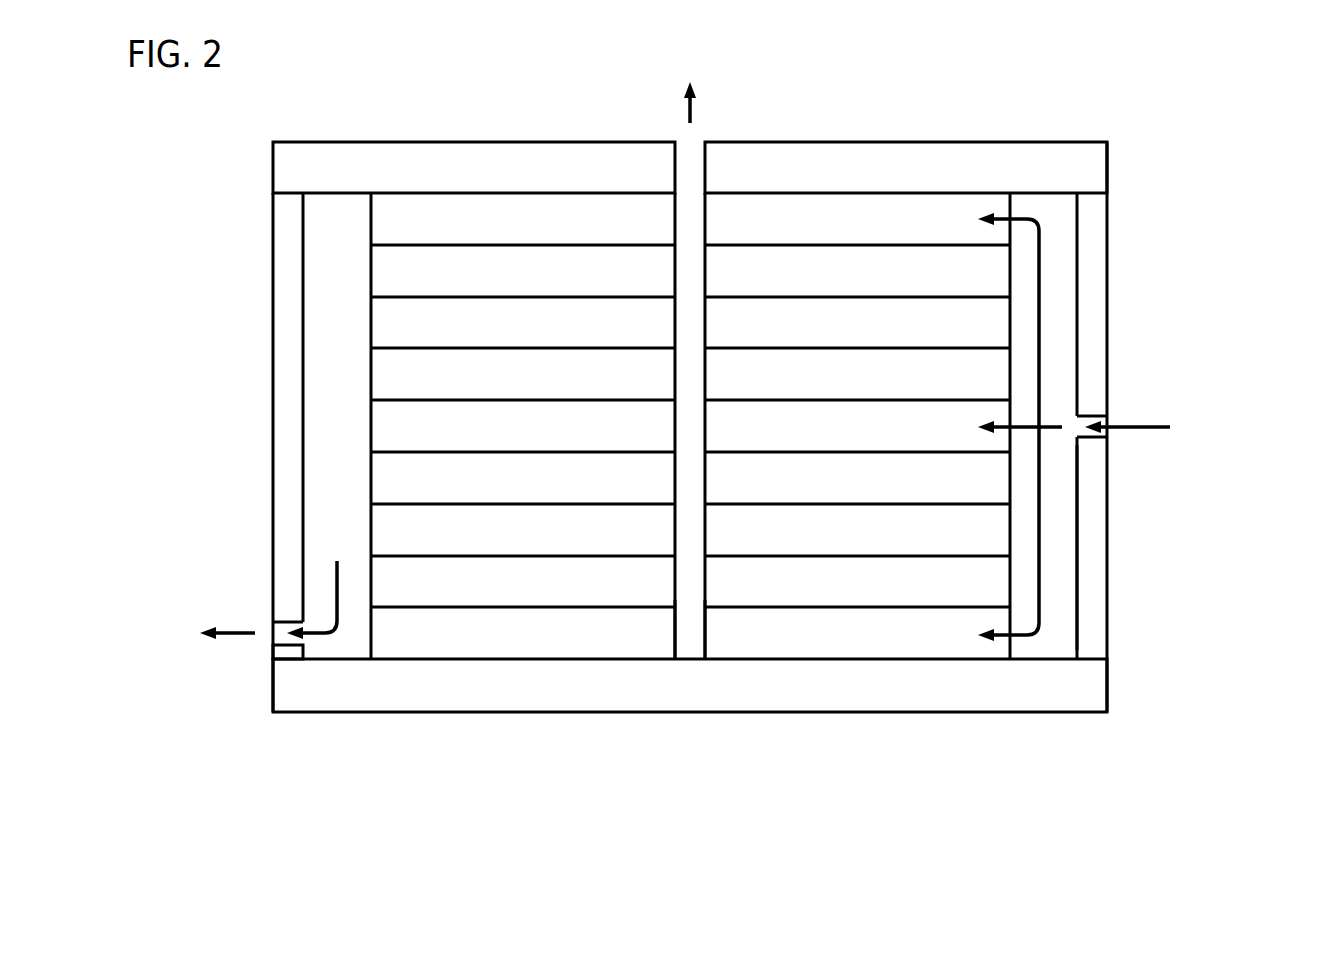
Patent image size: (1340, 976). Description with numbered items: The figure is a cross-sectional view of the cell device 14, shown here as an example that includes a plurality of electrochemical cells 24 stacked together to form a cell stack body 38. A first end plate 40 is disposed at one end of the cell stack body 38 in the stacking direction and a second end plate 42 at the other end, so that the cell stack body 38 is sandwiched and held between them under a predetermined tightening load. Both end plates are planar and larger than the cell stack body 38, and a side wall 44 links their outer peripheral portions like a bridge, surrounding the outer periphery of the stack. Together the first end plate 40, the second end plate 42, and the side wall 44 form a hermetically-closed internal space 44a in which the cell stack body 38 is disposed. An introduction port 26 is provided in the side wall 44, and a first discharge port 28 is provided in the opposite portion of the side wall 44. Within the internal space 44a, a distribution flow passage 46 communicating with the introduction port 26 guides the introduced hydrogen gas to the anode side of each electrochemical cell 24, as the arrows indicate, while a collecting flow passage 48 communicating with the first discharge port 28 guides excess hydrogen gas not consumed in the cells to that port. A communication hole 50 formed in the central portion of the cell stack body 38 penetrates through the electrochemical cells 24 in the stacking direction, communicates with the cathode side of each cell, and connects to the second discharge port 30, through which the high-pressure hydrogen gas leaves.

The cell device 14 is at (425, 104).
The electrochemical cell 24 is at (393, 267).
The introduction port 26 is at (1105, 420).
The first discharge port 28 is at (275, 632).
The second discharge port 30 is at (702, 158).
The cell stack body 38 is at (952, 188).
The first end plate 40 is at (891, 157).
The second end plate 42 is at (823, 688).
The side wall 44 is at (1093, 554).
The internal space 44a is at (1076, 597).
The distribution flow passage 46 is at (1070, 532).
The collecting flow passage 48 is at (348, 489).
The communication hole 50 is at (700, 636).